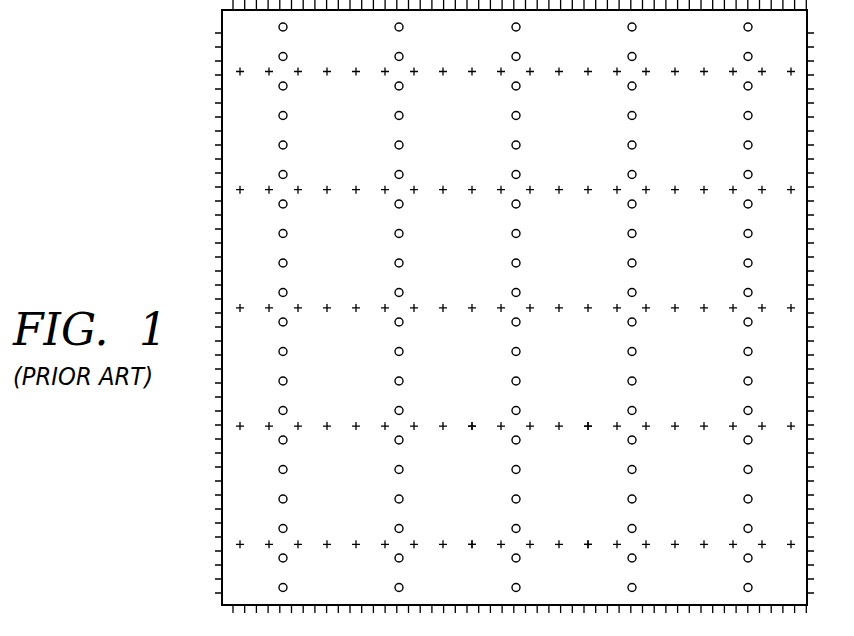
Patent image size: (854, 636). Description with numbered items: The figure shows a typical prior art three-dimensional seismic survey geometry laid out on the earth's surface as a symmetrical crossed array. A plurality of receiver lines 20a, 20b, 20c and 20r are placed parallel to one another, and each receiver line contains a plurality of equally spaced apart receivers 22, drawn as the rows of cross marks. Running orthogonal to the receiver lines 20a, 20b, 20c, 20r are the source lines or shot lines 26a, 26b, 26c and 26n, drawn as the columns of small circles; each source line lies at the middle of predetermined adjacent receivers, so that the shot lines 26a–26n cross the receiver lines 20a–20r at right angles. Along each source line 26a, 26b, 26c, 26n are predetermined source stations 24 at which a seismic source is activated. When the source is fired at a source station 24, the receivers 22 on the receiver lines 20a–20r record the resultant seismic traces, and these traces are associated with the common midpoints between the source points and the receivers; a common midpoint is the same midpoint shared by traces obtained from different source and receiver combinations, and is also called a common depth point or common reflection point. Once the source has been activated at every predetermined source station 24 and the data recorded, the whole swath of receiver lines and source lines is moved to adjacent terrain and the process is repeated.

The receiver line 20a is at (776, 544).
The receiver line 20b is at (775, 426).
The receiver line 20c is at (775, 308).
The receiver line 20r is at (776, 72).
The receiver 22 is at (473, 426).
The source station 24 is at (637, 471).
The source line 26a is at (743, 30).
The source line 26b is at (627, 30).
The source line 26c is at (511, 30).
The source line 26n is at (288, 41).